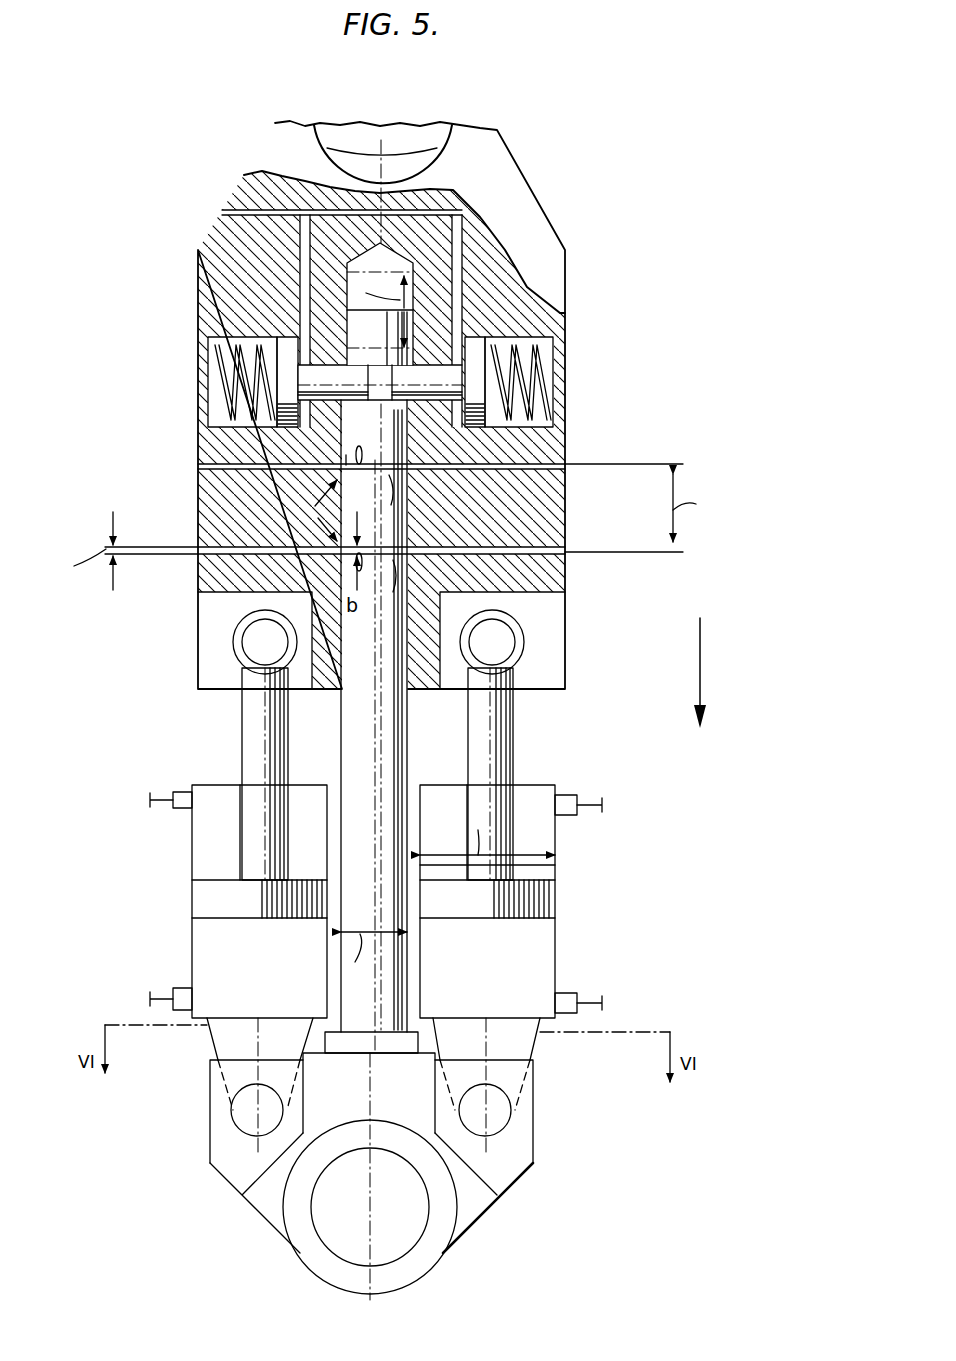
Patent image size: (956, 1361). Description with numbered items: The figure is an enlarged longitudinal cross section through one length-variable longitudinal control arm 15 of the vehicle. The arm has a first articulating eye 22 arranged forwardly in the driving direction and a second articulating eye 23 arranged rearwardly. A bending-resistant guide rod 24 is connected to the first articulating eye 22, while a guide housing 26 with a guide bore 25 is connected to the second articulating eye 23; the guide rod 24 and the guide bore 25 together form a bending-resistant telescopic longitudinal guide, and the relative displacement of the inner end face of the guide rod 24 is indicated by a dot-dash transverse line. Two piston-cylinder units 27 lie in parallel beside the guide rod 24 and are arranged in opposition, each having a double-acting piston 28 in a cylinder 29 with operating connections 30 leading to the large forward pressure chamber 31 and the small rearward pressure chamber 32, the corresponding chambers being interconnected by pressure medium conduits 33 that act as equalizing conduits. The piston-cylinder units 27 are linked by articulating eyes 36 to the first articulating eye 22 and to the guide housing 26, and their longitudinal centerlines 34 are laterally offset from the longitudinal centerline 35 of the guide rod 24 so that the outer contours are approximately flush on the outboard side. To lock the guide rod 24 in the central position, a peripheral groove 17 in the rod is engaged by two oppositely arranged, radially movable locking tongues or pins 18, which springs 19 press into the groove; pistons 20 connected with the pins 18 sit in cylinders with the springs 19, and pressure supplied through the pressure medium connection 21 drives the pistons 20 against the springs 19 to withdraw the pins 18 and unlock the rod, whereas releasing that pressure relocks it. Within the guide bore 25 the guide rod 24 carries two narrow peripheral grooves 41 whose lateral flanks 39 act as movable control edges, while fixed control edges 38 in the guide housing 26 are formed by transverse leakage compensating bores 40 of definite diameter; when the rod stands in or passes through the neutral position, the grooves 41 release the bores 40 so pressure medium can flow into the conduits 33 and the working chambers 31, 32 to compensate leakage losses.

The longitudinal control arm 15 is at (565, 628).
The peripheral groove 17 is at (388, 400).
The locking tongues or pins 18 is at (388, 363).
The springs 19 is at (232, 382).
The pistons 20 is at (288, 428).
The pressure medium connection 21 is at (448, 214).
The first articulating eye 22 is at (300, 1222).
The second articulating eye 23 is at (322, 141).
The guide rod 24 is at (340, 721).
The guide bore 25 is at (402, 660).
The guide housing 26 is at (565, 490).
The piston-cylinder units 27 is at (188, 851).
The piston 28 is at (200, 898).
The cylinder 29 is at (190, 826).
The operating connections 30 is at (183, 790).
The pressure chamber (large working chamber) 31 is at (205, 950).
The pressure chamber (small working chamber) 32 is at (298, 812).
The pressure medium conduits 33 is at (160, 790).
The longitudinal centerlines of the piston-cylinder units 34 is at (262, 896).
The longitudinal centerline of the guide rod 35 is at (392, 763).
The articulating eyes 36 is at (234, 642).
The fixed control edges 38 is at (316, 510).
The lateral flanks 39 is at (420, 530).
The leakage compensating bores 40 is at (545, 465).
The narrow peripheral grooves 41 is at (397, 543).